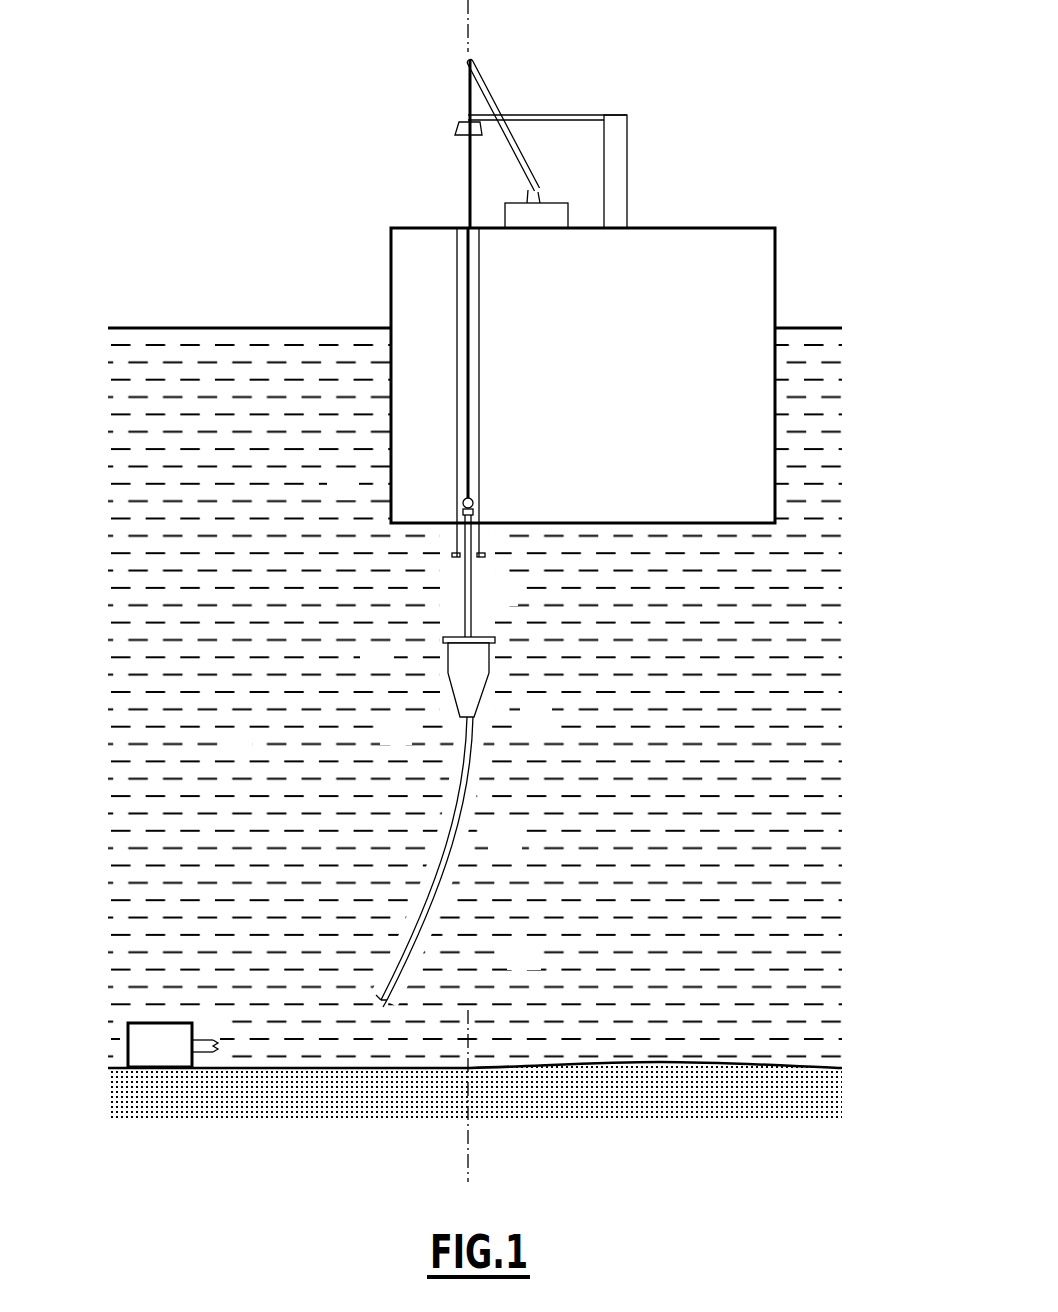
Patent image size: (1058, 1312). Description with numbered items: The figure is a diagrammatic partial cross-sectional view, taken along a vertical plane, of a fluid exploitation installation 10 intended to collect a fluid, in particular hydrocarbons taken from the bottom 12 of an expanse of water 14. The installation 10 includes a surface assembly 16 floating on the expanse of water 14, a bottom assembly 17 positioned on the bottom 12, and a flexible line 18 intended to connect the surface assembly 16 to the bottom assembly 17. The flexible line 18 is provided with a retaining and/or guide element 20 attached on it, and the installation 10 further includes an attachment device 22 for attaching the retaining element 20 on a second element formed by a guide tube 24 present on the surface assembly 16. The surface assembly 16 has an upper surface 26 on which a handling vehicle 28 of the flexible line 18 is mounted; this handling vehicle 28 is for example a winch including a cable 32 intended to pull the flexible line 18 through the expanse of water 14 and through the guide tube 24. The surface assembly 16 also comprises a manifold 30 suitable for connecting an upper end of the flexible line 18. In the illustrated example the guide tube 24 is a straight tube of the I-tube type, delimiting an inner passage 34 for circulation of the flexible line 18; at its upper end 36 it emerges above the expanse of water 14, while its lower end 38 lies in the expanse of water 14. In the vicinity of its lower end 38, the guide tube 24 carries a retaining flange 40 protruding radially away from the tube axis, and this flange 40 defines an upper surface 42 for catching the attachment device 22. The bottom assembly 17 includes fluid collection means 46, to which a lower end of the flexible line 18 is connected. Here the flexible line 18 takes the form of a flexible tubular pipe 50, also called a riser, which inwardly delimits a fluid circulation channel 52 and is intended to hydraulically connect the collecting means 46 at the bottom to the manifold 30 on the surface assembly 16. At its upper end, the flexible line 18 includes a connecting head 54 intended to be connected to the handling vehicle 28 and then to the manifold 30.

The fluid exploitation installation 10 is at (444, 596).
The bottom of the expanse of water 12 is at (640, 1087).
The expanse of water 14 is at (475, 699).
The surface assembly 16 is at (516, 262).
The bottom assembly 17 is at (126, 1040).
The flexible line 18 is at (456, 861).
The retaining and/or guide element 20 is at (417, 505).
The attachment device 22 is at (457, 687).
The guide tube 24 is at (486, 376).
The upper surface 26 is at (713, 227).
The handling vehicle 28 is at (503, 75).
The manifold 30 is at (567, 113).
The cable 32 is at (467, 173).
The inner passage 34 is at (473, 455).
The upper end of the tube 36 is at (457, 238).
The lower end of the tube 38 is at (455, 565).
The retaining flange 40 is at (483, 553).
The upper surface of the flange 42 is at (481, 694).
The fluid collection means 46 is at (446, 771).
The flexible tubular pipe 50 is at (450, 857).
The fluid circulation channel 52 is at (468, 598).
The connecting head 54 is at (475, 512).